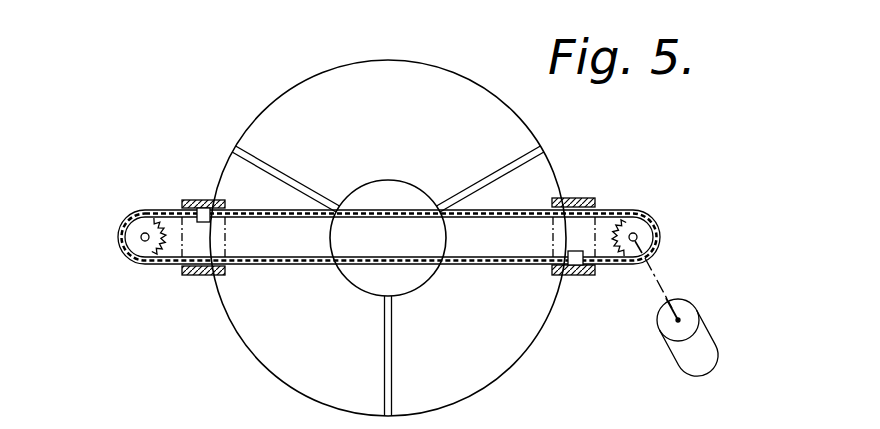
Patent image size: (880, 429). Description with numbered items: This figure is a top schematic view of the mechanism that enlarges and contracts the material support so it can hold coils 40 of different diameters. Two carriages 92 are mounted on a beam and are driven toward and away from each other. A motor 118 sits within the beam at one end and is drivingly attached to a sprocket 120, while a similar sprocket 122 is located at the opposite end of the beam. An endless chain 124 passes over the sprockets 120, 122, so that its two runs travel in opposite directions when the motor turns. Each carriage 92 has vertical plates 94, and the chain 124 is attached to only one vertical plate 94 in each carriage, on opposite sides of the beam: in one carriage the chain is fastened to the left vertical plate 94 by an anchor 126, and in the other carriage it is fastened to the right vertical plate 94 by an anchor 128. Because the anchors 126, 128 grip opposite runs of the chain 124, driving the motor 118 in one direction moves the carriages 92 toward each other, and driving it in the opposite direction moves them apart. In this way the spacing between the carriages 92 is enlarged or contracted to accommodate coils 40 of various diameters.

The coil 40 is at (347, 77).
The carriage 92 is at (173, 180).
The vertical plate 94 is at (192, 198).
The motor 118 is at (710, 363).
The sprocket 120 is at (643, 233).
The sprocket 122 is at (139, 233).
The endless chain 124 is at (478, 210).
The anchor 126 is at (570, 253).
The anchor 128 is at (205, 222).